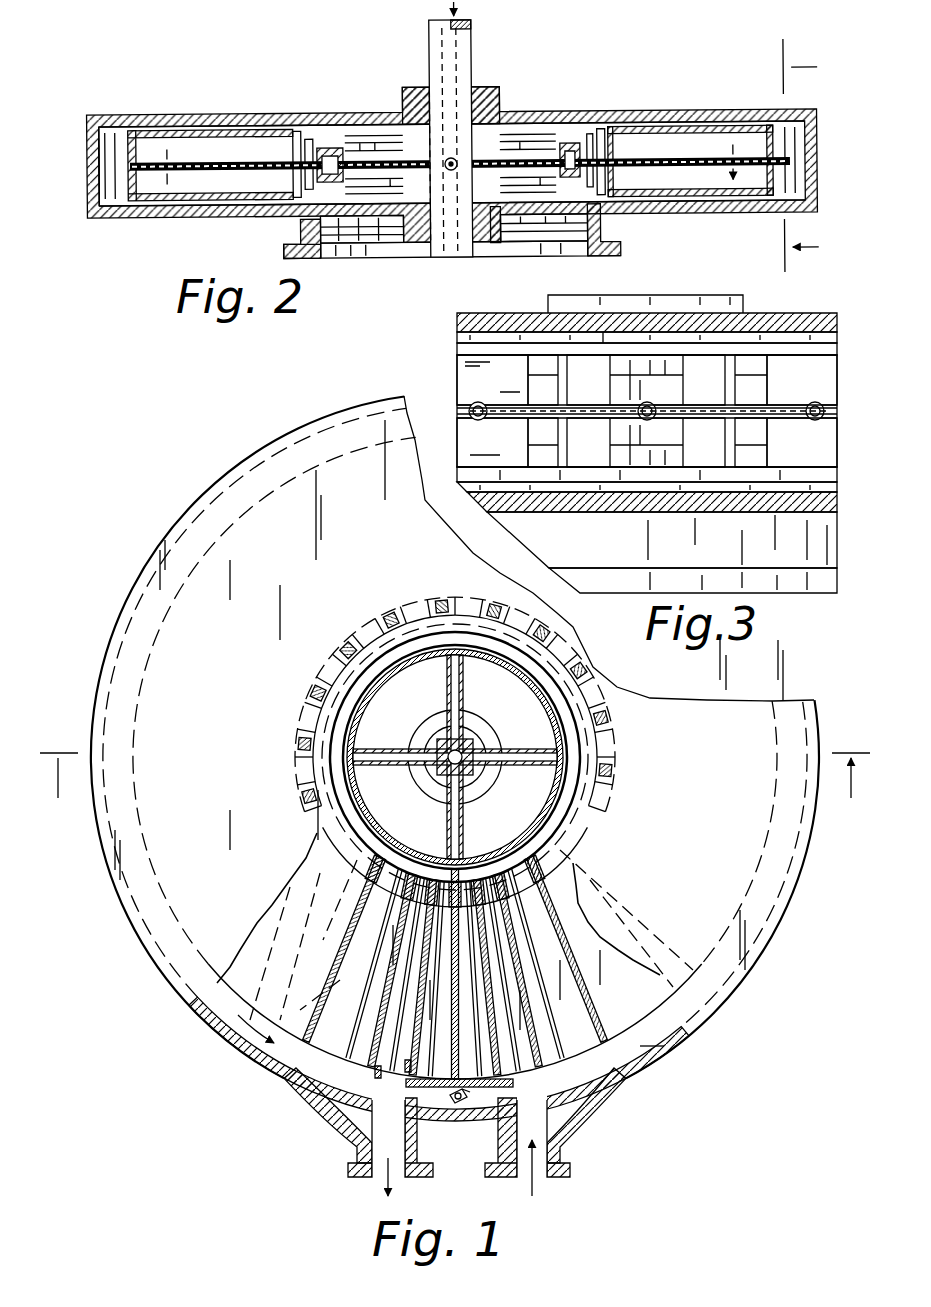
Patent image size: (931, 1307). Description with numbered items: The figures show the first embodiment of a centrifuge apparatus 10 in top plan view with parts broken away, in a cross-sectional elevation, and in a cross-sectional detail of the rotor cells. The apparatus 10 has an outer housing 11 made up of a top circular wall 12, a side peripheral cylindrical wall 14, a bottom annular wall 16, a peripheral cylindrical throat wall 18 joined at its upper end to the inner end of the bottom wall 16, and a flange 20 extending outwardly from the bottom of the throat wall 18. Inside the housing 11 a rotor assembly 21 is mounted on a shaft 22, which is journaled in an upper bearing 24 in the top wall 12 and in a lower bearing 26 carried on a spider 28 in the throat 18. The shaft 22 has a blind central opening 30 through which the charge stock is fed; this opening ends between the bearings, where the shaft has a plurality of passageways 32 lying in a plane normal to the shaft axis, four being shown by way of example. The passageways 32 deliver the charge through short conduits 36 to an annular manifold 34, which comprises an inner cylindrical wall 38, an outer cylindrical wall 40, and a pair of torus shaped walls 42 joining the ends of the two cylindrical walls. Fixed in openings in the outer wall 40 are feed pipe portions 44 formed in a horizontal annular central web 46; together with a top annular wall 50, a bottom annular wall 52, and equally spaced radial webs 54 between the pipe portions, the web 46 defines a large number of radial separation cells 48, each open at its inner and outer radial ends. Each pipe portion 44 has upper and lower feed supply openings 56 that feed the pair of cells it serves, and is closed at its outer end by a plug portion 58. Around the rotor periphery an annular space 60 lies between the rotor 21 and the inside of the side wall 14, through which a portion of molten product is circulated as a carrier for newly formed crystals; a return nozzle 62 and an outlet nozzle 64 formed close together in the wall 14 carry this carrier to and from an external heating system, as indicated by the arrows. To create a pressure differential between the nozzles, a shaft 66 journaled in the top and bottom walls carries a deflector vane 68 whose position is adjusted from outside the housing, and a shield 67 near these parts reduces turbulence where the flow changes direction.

In FIG. 2, the centrifuge apparatus 10 is at (172, 229).
In FIG. 1, the centrifuge apparatus 10 is at (126, 567).
In FIG. 2, the outer housing 11 is at (146, 110).
In FIG. 2, the top circular wall 12 is at (636, 120).
In FIG. 3, the top circular wall 12 is at (506, 318).
In FIG. 1, the top circular wall 12 is at (806, 907).
In FIG. 2, the side peripheral cylindrical wall 14 is at (817, 167).
In FIG. 1, the side peripheral cylindrical wall 14 is at (229, 1037).
In FIG. 2, the bottom annular wall 16 is at (722, 205).
In FIG. 3, the bottom annular wall 16 is at (579, 501).
In FIG. 2, the peripheral cylindrical throat wall 18 is at (600, 233).
In FIG. 3, the peripheral cylindrical throat wall 18 is at (816, 529).
In FIG. 2, the flange 20 is at (612, 251).
In FIG. 3, the flange 20 is at (816, 584).
In FIG. 2, the rotor assembly 21 is at (378, 206).
In FIG. 2, the shaft 22 is at (436, 62).
In FIG. 3, the shaft 22 is at (649, 338).
In FIG. 2, the upper bearing 24 is at (404, 100).
In FIG. 3, the upper bearing 24 is at (743, 309).
In FIG. 2, the lower bearing 26 is at (420, 254).
In FIG. 1, the lower bearing 26 is at (441, 716).
In FIG. 2, the spider 28 is at (515, 229).
In FIG. 2, the central opening 30 is at (461, 92).
In FIG. 1, the central opening 30 is at (429, 740).
In FIG. 1, the passageways 32 is at (432, 779).
In FIG. 1, the annular manifold 34 is at (540, 813).
In FIG. 2, the short conduits 36 is at (466, 170).
In FIG. 1, the short conduits 36 is at (518, 746).
In FIG. 1, the inner cylindrical wall 38 is at (553, 781).
In FIG. 3, the outer cylindrical wall 40 is at (666, 390).
In FIG. 1, the outer cylindrical wall 40 is at (504, 864).
In FIG. 2, the torus shaped walls 42 is at (331, 146).
In FIG. 2, the feed pipe portions 44 is at (692, 161).
In FIG. 3, the feed pipe portions 44 is at (476, 402).
In FIG. 1, the feed pipe portions 44 is at (557, 1061).
In FIG. 3, the horizontal annular central web 46 is at (671, 420).
In FIG. 2, the radial separation cells 48 is at (266, 142).
In FIG. 3, the radial separation cells 48 is at (496, 397).
In FIG. 1, the radial separation cells 48 is at (382, 938).
In FIG. 2, the top annular wall 50 is at (742, 126).
In FIG. 3, the top annular wall 50 is at (816, 350).
In FIG. 1, the top annular wall 50 is at (704, 997).
In FIG. 2, the bottom annular wall 52 is at (660, 200).
In FIG. 3, the bottom annular wall 52 is at (816, 473).
In FIG. 3, the radial webs 54 is at (566, 386).
In FIG. 1, the radial webs 54 is at (411, 1067).
In FIG. 2, the feed supply openings 56 is at (193, 147).
In FIG. 1, the feed supply openings 56 is at (262, 1035).
In FIG. 2, the plug portion 58 is at (128, 165).
In FIG. 1, the annular space 60 is at (652, 1036).
In FIG. 1, the return nozzle 62 is at (561, 1150).
In FIG. 1, the outlet nozzle 64 is at (357, 1153).
In FIG. 1, the shaft 66 is at (460, 1104).
In FIG. 1, the shield 67 is at (501, 1087).
In FIG. 1, the deflector vane 68 is at (452, 1104).